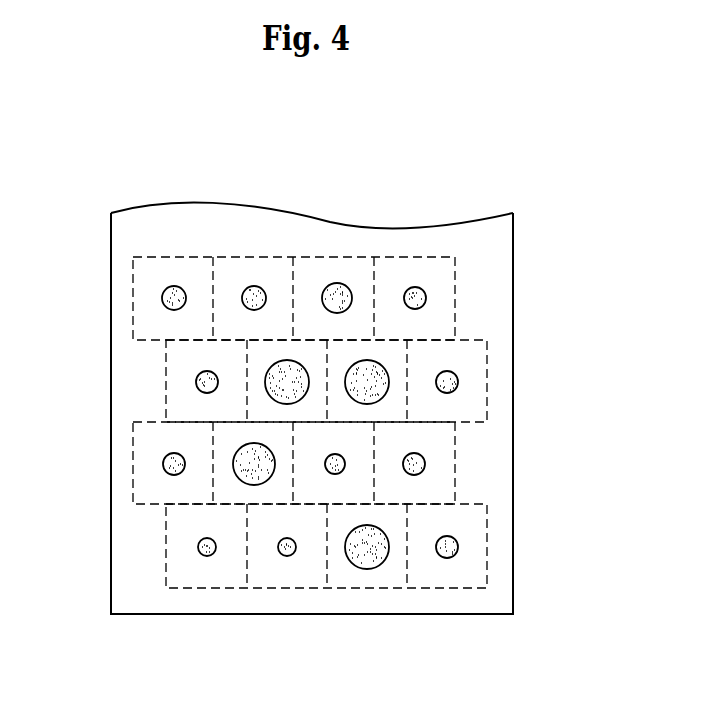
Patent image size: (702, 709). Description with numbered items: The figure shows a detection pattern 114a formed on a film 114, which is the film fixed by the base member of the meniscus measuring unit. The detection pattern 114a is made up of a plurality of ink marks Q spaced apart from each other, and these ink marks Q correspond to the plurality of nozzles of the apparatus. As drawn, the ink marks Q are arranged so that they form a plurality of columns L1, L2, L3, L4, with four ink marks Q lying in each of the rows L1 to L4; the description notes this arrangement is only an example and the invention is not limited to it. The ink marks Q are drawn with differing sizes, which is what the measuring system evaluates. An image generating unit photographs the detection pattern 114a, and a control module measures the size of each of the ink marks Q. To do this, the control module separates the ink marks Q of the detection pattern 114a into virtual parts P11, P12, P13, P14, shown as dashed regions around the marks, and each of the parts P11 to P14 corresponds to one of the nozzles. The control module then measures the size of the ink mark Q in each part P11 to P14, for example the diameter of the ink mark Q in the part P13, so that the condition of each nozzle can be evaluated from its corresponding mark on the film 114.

The film 114 is at (513, 274).
The detection pattern 114a is at (416, 218).
The first column of ink marks L1 is at (97, 545).
The second column of ink marks L2 is at (97, 463).
The third column of ink marks L3 is at (97, 380).
The fourth column of ink marks L4 is at (97, 297).
The first virtual part P11 is at (207, 588).
The second virtual part P12 is at (287, 588).
The third virtual part P13 is at (435, 475).
The fourth virtual part P14 is at (447, 588).
The ink mark Q is at (377, 537).